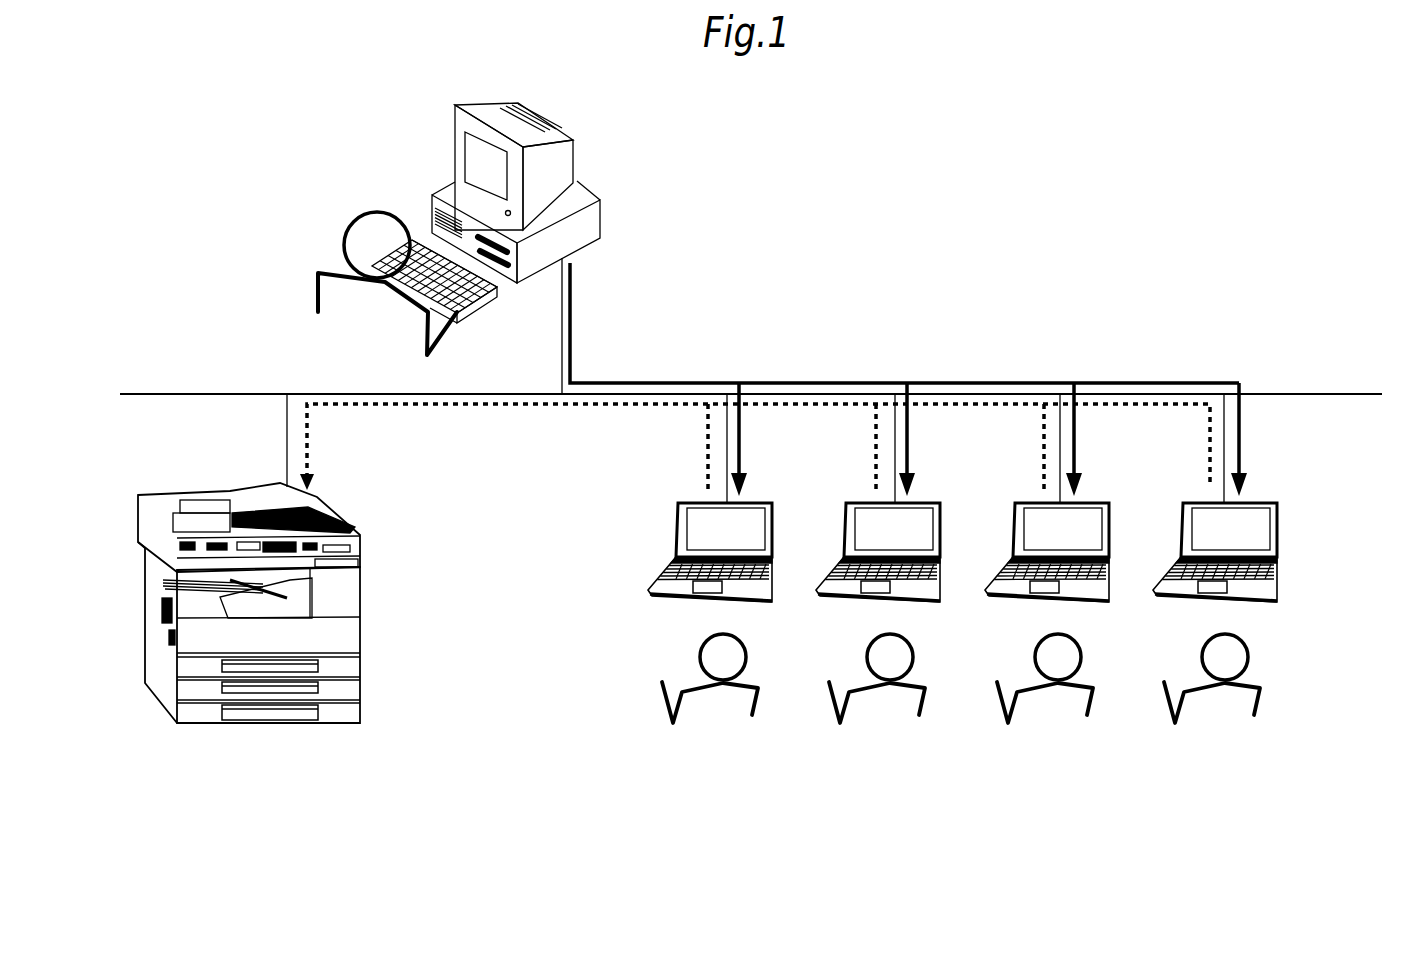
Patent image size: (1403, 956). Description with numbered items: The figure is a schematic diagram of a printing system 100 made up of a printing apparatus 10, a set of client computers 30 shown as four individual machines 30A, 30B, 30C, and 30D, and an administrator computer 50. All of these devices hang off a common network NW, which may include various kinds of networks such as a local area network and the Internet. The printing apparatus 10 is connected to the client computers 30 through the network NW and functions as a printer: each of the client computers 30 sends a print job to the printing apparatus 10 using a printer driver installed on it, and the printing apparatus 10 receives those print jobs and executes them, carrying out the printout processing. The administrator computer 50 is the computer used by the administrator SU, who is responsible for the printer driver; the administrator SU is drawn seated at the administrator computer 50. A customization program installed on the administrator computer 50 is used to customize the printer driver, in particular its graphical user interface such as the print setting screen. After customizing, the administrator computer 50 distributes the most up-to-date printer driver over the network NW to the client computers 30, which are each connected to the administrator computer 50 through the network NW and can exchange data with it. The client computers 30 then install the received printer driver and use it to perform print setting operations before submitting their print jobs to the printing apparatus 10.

The printing system 100 is at (177, 115).
The printing apparatus 10 is at (363, 585).
The client computers 30 is at (943, 515).
The client computer 30A is at (678, 527).
The client computer 30B is at (845, 527).
The client computer 30C is at (1013, 527).
The client computer 30D is at (1180, 528).
The administrator computer 50 is at (573, 153).
The network NW is at (158, 394).
The administrator SU is at (385, 353).